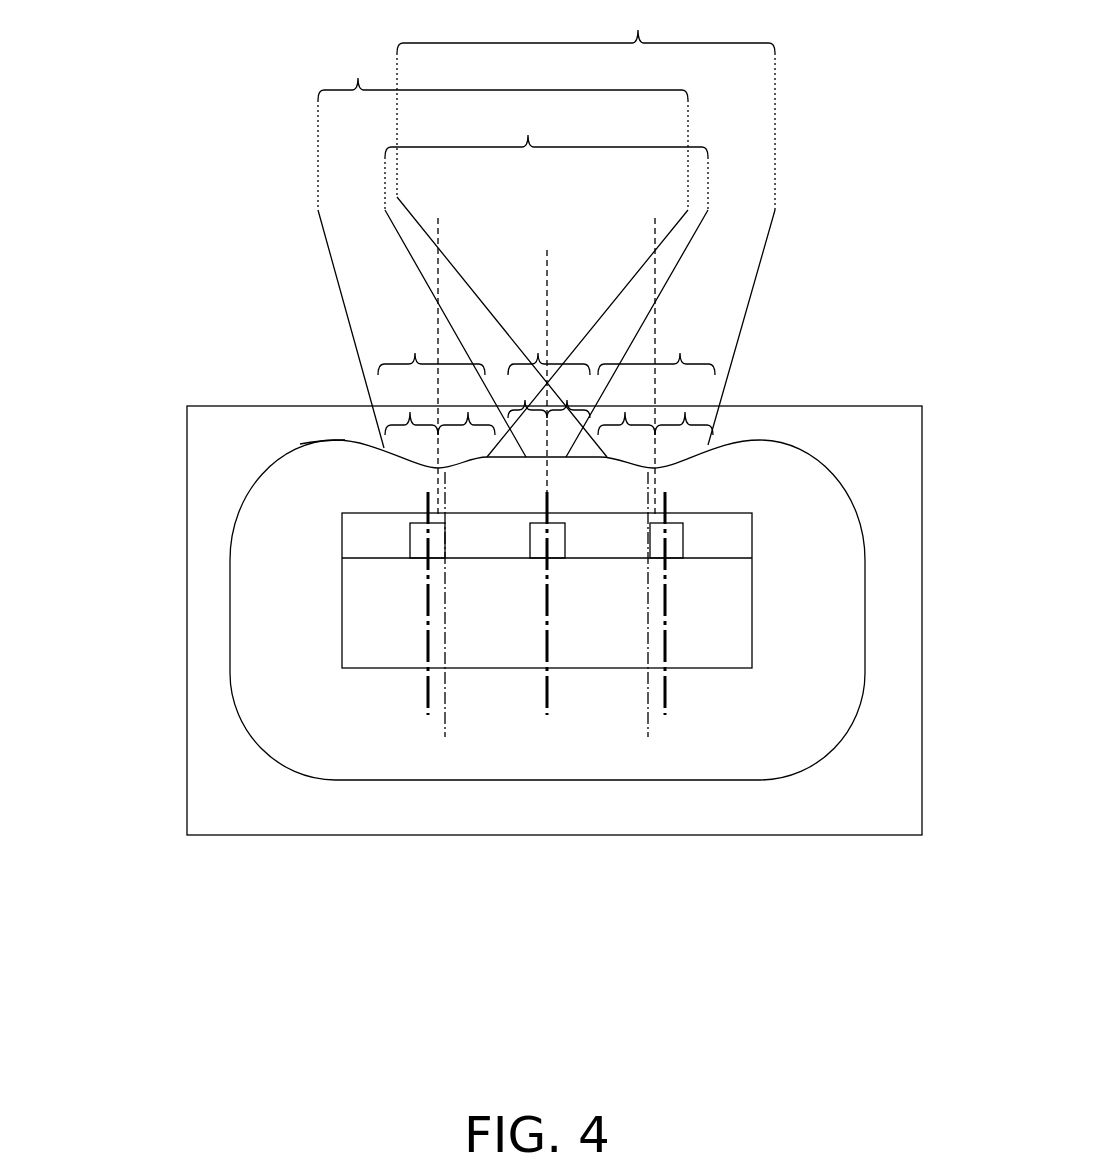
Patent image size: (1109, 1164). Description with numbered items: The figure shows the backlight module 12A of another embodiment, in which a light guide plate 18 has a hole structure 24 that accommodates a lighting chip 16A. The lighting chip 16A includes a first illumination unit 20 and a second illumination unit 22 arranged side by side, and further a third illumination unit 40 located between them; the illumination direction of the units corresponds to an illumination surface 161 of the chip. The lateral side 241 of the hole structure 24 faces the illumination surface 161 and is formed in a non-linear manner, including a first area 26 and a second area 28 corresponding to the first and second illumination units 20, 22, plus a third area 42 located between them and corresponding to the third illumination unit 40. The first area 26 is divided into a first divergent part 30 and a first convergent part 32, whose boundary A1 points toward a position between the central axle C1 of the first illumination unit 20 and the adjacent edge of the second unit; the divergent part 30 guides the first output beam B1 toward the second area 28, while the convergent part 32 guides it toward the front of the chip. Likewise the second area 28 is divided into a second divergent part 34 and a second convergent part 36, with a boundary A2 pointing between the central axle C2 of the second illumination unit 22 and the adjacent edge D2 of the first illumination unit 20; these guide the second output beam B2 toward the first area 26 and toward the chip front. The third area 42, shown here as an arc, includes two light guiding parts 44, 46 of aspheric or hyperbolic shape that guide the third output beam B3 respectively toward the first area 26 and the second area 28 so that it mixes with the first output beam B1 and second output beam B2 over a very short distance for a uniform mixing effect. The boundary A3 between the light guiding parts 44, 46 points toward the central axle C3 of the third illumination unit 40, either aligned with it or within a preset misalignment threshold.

The backlight module 12A is at (852, 288).
The light guide plate 18 is at (187, 417).
The hole structure 24 is at (243, 583).
The lateral side 241 is at (343, 440).
The illumination surface 161 is at (722, 513).
The first illumination unit 20 is at (418, 540).
The third illumination unit 40 is at (532, 541).
The second illumination unit 22 is at (677, 540).
The lighting chip 16A is at (762, 897).
The first area 26 is at (431, 345).
The third area 42 is at (549, 345).
The second area 28 is at (656, 345).
The first divergent part 30 is at (466, 403).
The first convergent part 32 is at (411, 406).
The second divergent part 34 is at (626, 406).
The second convergent part 36 is at (684, 406).
The light guiding part 44 is at (525, 397).
The light guiding part 46 is at (569, 397).
The boundary A1 is at (441, 356).
The boundary A2 is at (653, 356).
The boundary A3 is at (547, 369).
The first output beam B1 is at (503, 252).
The second output beam B2 is at (586, 228).
The third output beam B3 is at (546, 280).
The central axle C1 is at (409, 603).
The central axle C2 is at (684, 603).
The central axle C3 is at (547, 622).
The adjacent edge D2 is at (546, 612).